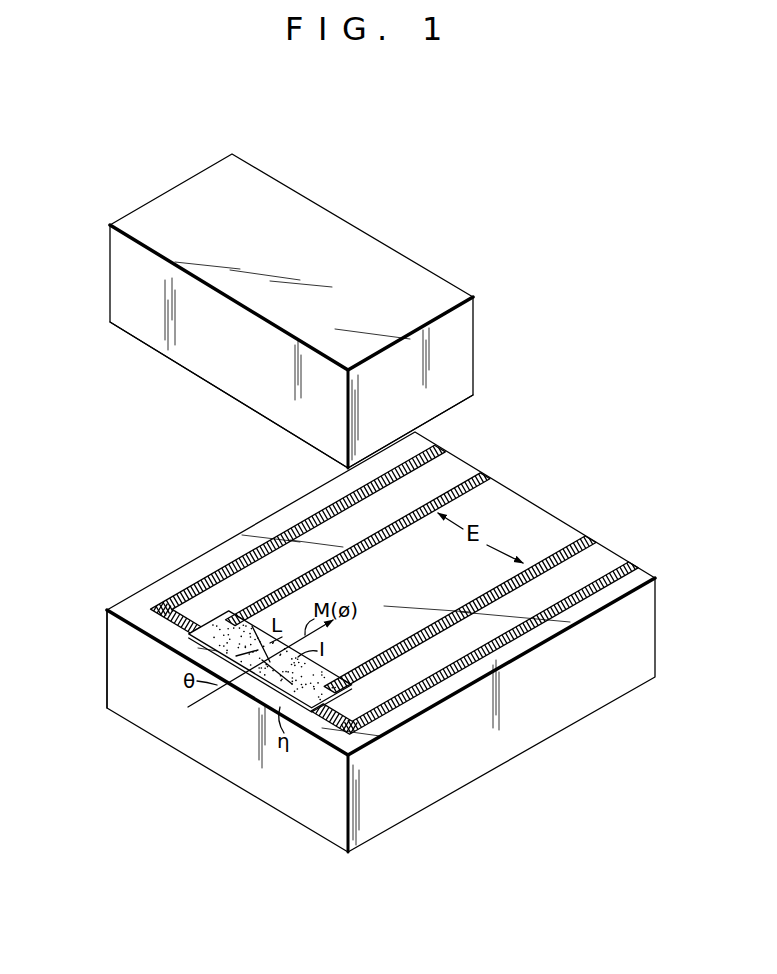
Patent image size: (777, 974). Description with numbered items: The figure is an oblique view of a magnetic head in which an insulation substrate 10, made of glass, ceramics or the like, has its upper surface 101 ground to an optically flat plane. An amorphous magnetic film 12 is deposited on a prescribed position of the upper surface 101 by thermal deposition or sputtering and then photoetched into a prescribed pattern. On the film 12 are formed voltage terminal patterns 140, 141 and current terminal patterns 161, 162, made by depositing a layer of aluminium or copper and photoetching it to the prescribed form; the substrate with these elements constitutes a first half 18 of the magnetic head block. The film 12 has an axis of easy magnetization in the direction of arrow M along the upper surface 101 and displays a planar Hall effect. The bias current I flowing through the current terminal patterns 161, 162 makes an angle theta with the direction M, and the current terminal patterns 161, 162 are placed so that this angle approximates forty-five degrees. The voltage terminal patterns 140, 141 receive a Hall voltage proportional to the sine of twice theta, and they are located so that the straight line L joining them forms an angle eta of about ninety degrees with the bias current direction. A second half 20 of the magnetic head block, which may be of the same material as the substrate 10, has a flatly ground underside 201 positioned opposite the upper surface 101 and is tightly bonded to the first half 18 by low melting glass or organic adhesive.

The insulation substrate 10 is at (526, 720).
The upper surface of insulation substrate 101 is at (528, 513).
The amorphous magnetic film 12 is at (265, 699).
The voltage terminal pattern 140 is at (628, 563).
The voltage terminal pattern 141 is at (486, 475).
The current terminal pattern 161 is at (440, 445).
The current terminal pattern 162 is at (584, 536).
The first half of magnetic head block 18 is at (100, 626).
The second half of magnetic head block 20 is at (111, 278).
The underside of second half 201 is at (216, 392).